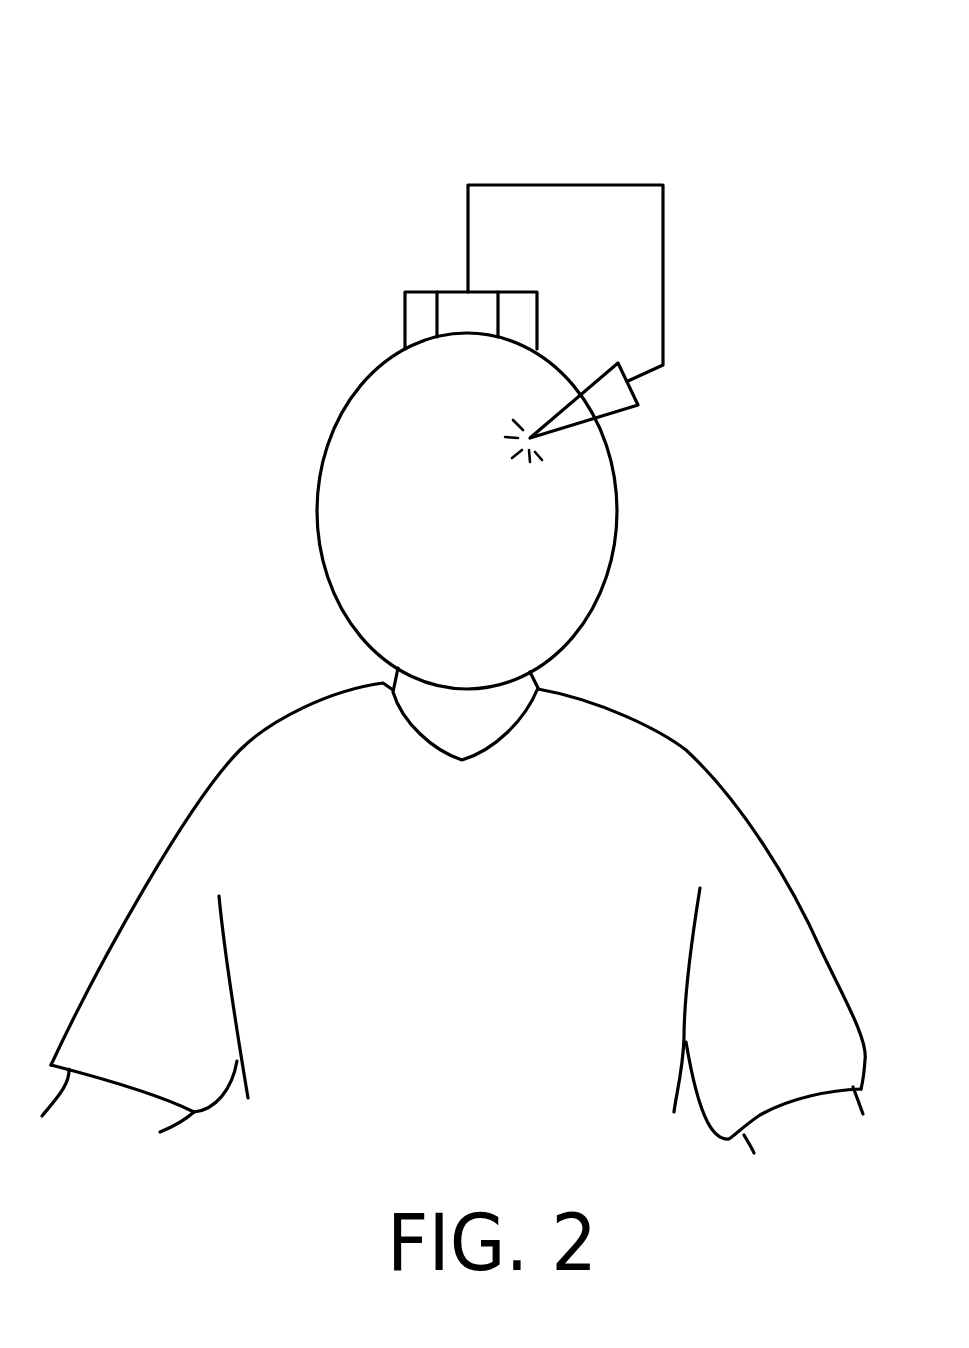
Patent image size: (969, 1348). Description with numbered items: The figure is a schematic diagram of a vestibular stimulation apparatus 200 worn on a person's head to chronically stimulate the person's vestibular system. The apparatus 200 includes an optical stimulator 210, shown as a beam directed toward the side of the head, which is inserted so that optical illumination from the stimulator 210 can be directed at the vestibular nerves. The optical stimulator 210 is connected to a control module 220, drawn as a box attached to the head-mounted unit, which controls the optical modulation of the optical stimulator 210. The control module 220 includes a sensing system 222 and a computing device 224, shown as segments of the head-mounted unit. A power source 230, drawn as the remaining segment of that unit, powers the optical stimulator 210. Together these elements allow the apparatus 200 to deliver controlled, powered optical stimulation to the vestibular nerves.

The vestibular stimulation apparatus 200 is at (360, 132).
The optical stimulator 210 is at (623, 415).
The control module 220 is at (537, 323).
The sensing system 222 is at (458, 317).
The computing device 224 is at (519, 310).
The power source 230 is at (417, 318).